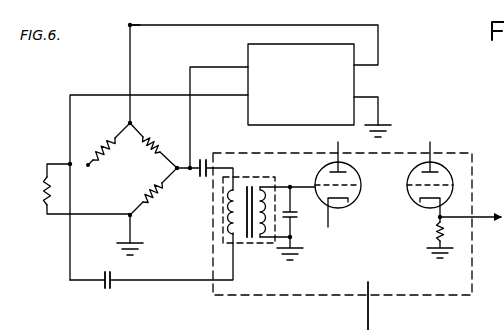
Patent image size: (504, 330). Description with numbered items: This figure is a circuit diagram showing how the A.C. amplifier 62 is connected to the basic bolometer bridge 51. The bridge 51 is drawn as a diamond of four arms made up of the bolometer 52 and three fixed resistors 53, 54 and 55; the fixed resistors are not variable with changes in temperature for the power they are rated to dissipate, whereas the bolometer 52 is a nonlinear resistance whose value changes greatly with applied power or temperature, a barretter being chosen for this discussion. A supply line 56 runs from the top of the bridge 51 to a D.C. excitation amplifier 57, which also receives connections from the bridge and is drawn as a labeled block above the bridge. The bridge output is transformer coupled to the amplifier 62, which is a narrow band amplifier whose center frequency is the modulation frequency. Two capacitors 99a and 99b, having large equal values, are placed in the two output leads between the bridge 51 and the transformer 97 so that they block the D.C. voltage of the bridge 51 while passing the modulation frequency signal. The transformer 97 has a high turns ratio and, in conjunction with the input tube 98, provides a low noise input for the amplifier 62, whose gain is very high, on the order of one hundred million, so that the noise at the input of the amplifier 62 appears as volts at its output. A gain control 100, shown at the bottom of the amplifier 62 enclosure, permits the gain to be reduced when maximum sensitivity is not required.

The bolometer bridge 51 is at (132, 169).
The bolometer 52 is at (45, 180).
The fixed resistor 53 is at (103, 151).
The fixed resistor 54 is at (155, 146).
The fixed resistor 55 is at (158, 196).
The supply line 56 is at (134, 25).
The D.C. excitation amplifier 57 is at (246, 47).
The amplifier 62 is at (341, 298).
The transformer 97 is at (249, 186).
The input tube 98 is at (348, 202).
The capacitor 99a is at (104, 284).
The capacitor 99b is at (202, 159).
The gain control 100 is at (378, 308).